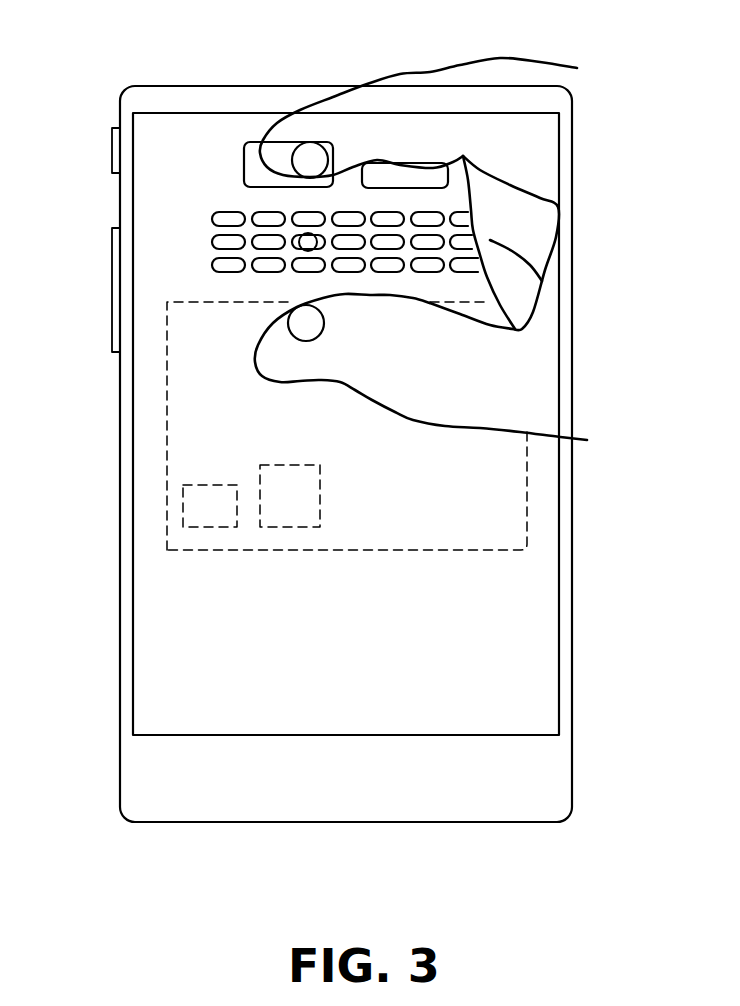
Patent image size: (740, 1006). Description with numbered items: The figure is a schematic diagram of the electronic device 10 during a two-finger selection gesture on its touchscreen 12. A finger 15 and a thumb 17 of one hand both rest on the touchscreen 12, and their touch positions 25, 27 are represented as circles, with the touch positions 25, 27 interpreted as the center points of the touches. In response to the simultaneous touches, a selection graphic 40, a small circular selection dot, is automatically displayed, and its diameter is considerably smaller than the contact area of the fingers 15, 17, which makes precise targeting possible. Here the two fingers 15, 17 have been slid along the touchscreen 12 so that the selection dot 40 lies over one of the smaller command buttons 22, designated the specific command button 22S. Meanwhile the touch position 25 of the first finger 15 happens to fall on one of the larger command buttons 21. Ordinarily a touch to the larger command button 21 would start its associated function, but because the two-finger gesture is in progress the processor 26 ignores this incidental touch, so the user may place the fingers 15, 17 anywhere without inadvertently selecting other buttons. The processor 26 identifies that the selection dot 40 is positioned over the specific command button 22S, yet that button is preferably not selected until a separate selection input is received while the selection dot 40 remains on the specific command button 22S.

The electronic device 10 is at (643, 74).
The touchscreen 12 is at (559, 573).
The finger 15 is at (270, 148).
The thumb 17 is at (278, 382).
The larger command button 21 is at (243, 155).
The smaller command buttons 22 is at (212, 242).
The specific command button 22S is at (298, 237).
The touch position 25 is at (317, 143).
The processor 26 is at (183, 513).
The touch position 27 is at (288, 324).
The selection graphic 40 is at (308, 251).